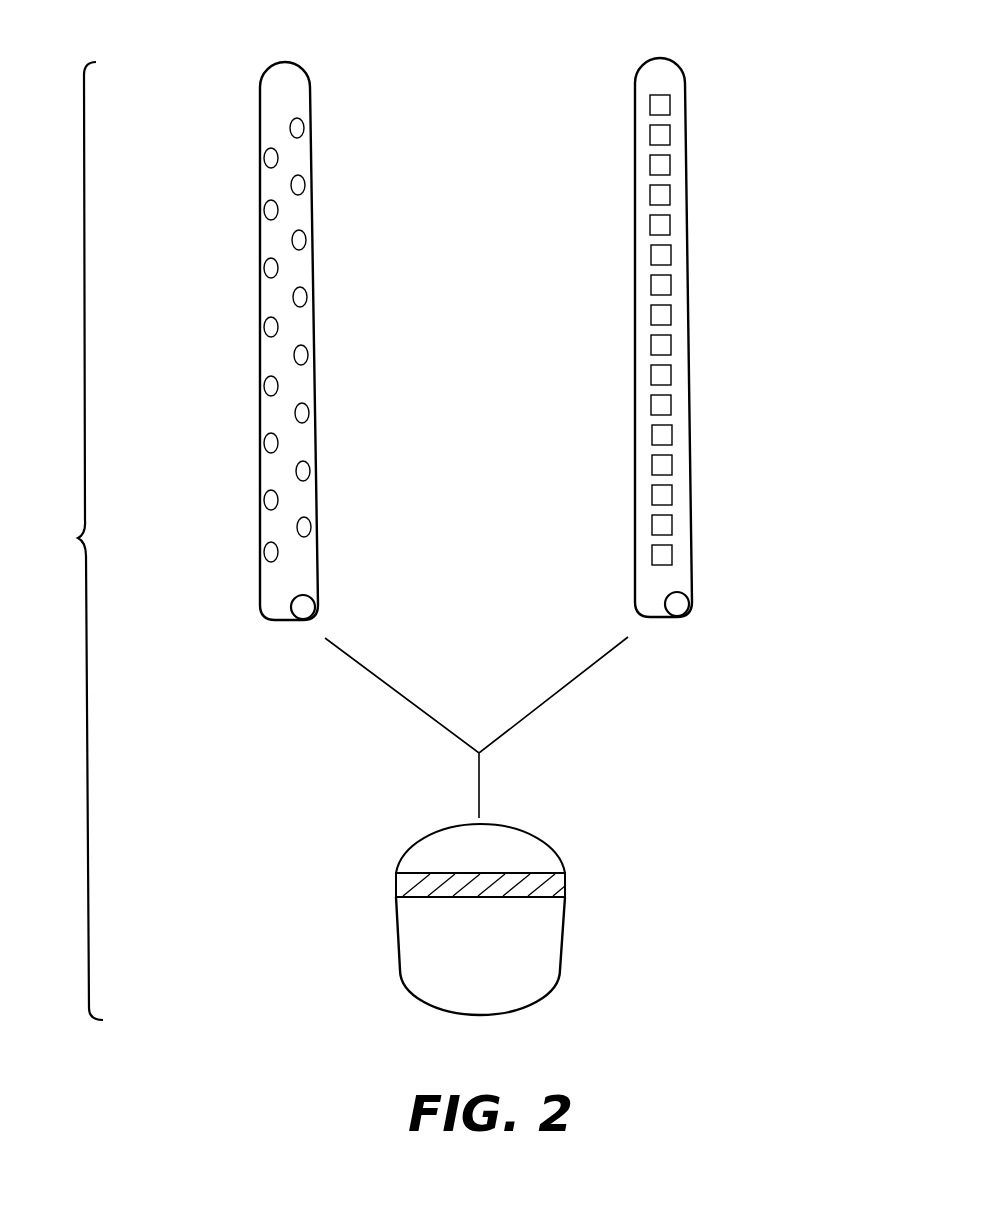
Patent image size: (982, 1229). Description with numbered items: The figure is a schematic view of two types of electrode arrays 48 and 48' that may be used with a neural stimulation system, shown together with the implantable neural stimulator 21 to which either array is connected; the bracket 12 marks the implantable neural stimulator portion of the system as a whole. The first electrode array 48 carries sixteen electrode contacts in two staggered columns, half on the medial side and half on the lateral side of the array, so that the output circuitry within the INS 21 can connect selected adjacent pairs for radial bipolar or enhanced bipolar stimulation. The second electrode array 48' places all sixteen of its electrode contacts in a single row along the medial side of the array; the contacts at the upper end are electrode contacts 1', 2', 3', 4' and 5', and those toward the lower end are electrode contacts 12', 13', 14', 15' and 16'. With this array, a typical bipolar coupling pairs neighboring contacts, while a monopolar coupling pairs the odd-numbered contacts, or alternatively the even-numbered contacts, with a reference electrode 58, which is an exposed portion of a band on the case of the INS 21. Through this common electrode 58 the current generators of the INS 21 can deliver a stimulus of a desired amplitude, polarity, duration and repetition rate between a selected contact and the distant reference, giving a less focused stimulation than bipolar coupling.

The implantable neural stimulator portion 12 is at (60, 541).
The electrode array 48 is at (231, 339).
The electrode array 48' is at (731, 336).
The implantable neural stimulator (INS) 21 is at (397, 921).
The reference electrode 58 is at (555, 885).
The electrode contact 1' is at (679, 106).
The electrode contact 2' is at (679, 136).
The electrode contact 3' is at (679, 166).
The electrode contact 4' is at (679, 196).
The electrode contact 5' is at (679, 226).
The electrode contact 12' is at (689, 436).
The electrode contact 13' is at (689, 466).
The electrode contact 14' is at (689, 496).
The electrode contact 15' is at (689, 526).
The electrode contact 16' is at (689, 556).